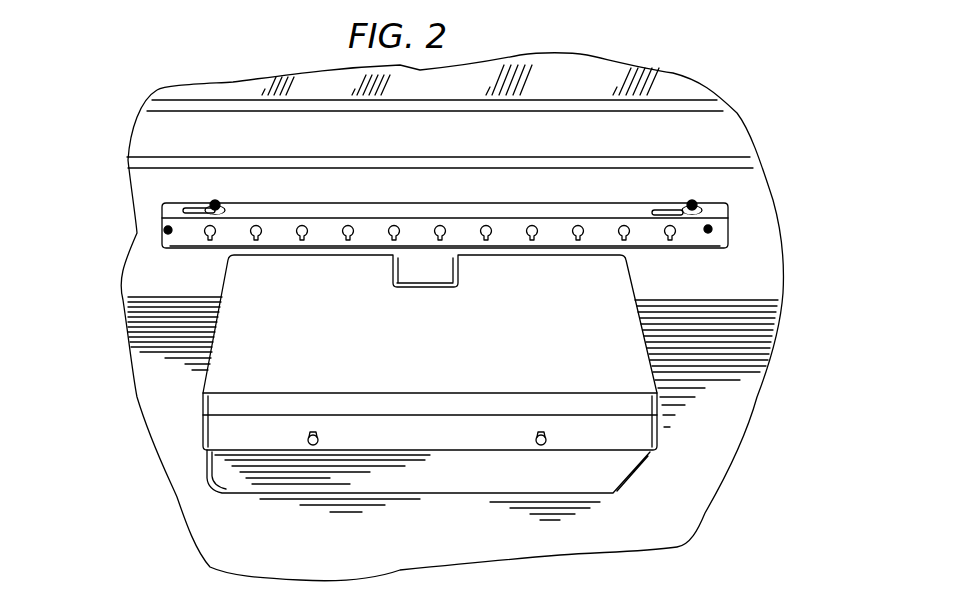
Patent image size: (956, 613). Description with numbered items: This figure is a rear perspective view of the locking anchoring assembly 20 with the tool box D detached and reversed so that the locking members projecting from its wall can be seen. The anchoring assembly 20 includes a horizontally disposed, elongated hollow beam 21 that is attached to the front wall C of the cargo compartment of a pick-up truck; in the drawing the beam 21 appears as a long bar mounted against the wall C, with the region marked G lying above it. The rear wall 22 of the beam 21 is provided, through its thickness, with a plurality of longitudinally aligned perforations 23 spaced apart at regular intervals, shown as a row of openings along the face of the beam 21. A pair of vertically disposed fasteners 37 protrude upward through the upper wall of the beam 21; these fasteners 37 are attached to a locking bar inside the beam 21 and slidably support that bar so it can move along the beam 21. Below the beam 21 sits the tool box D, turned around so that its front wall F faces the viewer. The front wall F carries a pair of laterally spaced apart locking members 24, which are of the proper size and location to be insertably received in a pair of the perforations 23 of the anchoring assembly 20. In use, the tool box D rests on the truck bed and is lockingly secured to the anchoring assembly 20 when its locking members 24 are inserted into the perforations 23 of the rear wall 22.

The locking anchoring assembly 20 is at (568, 203).
The elongated hollow beam 21 is at (722, 208).
The rear wall of beam 22 is at (692, 240).
The perforations 23 is at (302, 235).
The locking members 24 is at (537, 445).
The fasteners 37 is at (217, 203).
The gutter G is at (160, 126).
The front wall of cargo compartment C is at (137, 260).
The toolbox D is at (203, 392).
The front wall of tool box F is at (218, 437).